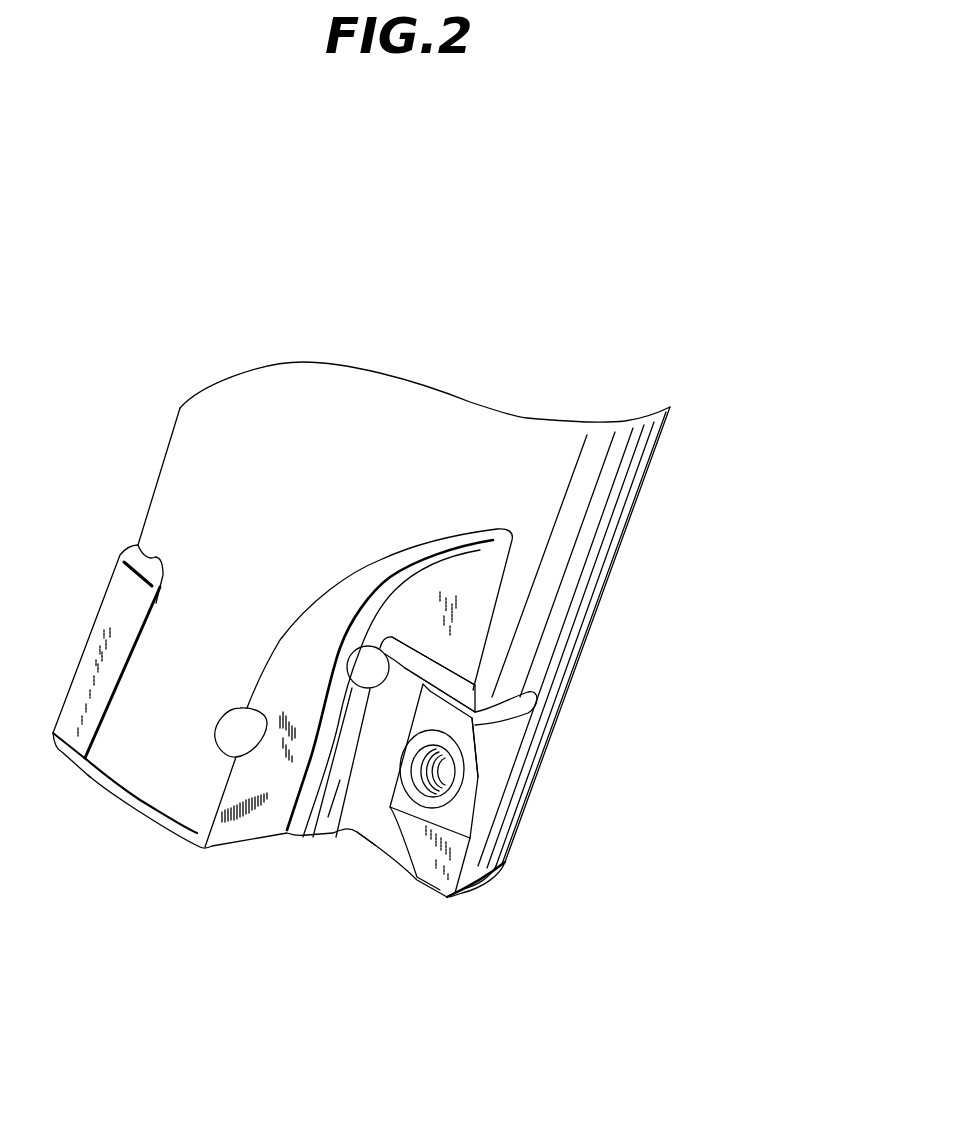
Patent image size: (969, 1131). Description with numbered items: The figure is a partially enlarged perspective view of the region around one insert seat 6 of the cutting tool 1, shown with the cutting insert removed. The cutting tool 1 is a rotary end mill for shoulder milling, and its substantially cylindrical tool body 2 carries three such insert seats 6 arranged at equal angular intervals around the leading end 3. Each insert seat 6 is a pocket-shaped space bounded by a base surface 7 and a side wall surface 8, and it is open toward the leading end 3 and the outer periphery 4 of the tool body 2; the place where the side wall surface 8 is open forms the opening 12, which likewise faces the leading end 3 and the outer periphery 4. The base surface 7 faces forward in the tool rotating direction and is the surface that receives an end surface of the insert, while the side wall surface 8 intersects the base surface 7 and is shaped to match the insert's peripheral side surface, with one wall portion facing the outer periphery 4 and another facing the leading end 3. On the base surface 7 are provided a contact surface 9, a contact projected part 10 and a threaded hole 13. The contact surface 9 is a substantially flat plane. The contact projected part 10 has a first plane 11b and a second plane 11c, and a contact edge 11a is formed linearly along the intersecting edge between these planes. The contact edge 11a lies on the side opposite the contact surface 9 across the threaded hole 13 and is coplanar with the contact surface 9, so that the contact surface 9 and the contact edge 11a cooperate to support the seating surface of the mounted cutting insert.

The cutting tool 1 is at (388, 497).
The tool body 2 is at (340, 517).
The leading end 3 is at (260, 840).
The outer periphery 4 is at (567, 577).
The insert seat 6 is at (413, 825).
The base surface 7 is at (450, 897).
The side wall surface 8 is at (483, 718).
The contact surface 9 is at (428, 852).
The contact projected part 10 is at (458, 760).
The contact edge 11a is at (467, 683).
The first plane 11b is at (480, 713).
The second plane 11c is at (430, 707).
The opening 12 is at (518, 745).
The threaded hole 13 is at (447, 787).